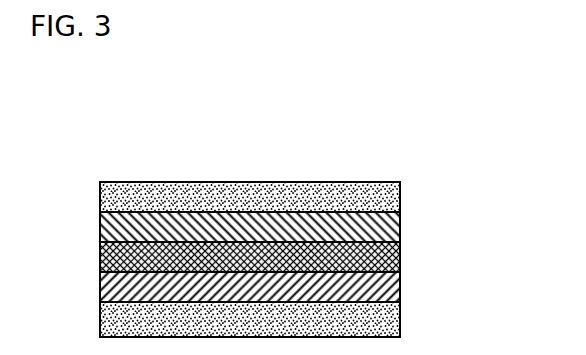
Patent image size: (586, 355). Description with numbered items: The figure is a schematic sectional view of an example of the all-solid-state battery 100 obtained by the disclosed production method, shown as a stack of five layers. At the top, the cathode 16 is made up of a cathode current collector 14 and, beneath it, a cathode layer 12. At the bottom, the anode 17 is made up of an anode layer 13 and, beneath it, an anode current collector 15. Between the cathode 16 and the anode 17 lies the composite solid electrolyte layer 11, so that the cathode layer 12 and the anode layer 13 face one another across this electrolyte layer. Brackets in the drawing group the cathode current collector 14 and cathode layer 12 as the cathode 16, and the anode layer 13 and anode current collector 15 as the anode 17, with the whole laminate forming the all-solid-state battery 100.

The all-solid-state battery 100 is at (93, 128).
The cathode current collector 14 is at (400, 194).
The cathode layer 12 is at (400, 218).
The composite solid electrolyte layer 11 is at (400, 251).
The anode layer 13 is at (400, 285).
The anode current collector 15 is at (400, 318).
The cathode 16 is at (470, 174).
The anode 17 is at (470, 288).